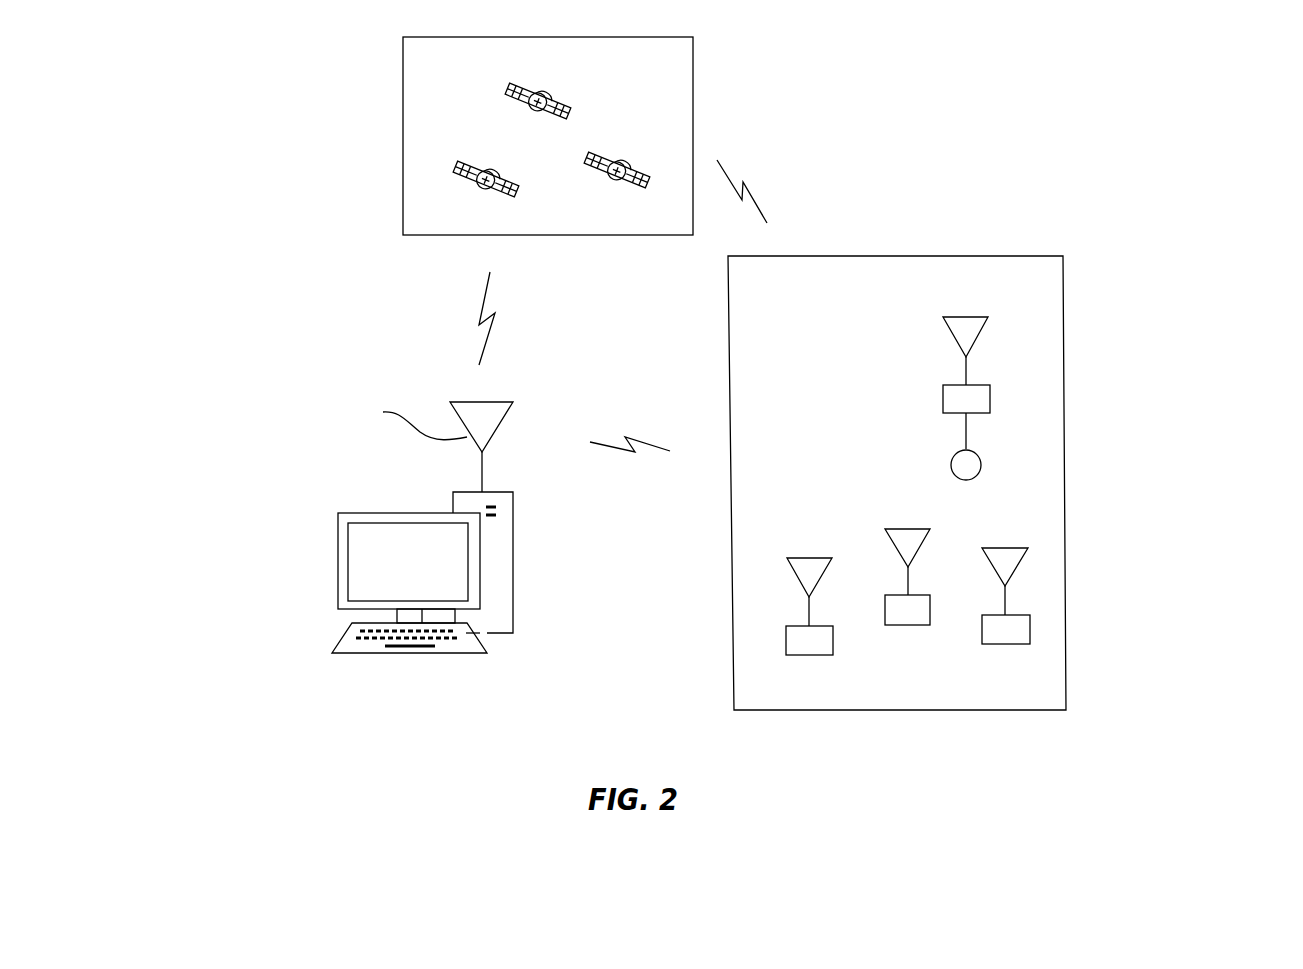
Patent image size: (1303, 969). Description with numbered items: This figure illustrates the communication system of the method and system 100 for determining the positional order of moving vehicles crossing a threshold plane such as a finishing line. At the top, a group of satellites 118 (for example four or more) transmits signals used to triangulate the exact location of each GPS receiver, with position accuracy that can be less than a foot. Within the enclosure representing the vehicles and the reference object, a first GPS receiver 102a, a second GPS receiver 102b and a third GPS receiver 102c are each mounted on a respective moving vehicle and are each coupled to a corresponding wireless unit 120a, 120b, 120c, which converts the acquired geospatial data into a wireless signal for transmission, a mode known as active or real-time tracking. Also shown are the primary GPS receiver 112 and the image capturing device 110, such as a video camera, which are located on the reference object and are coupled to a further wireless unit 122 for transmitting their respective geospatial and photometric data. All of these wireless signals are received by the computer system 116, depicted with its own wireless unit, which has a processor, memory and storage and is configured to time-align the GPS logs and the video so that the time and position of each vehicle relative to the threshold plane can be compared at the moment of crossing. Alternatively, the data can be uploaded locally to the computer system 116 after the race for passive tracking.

The system 100 is at (198, 208).
The satellites 118 is at (385, 85).
The computer system 116 is at (320, 483).
The wireless unit 122 is at (987, 327).
The primary GPS receiver 112 is at (990, 402).
The image capturing device 110 is at (982, 467).
The wireless unit 120a is at (797, 578).
The GPS receiver 102a is at (803, 655).
The wireless unit 120b is at (907, 549).
The GPS receiver 102b is at (907, 628).
The wireless unit 120c is at (1005, 569).
The GPS receiver 102c is at (1006, 647).